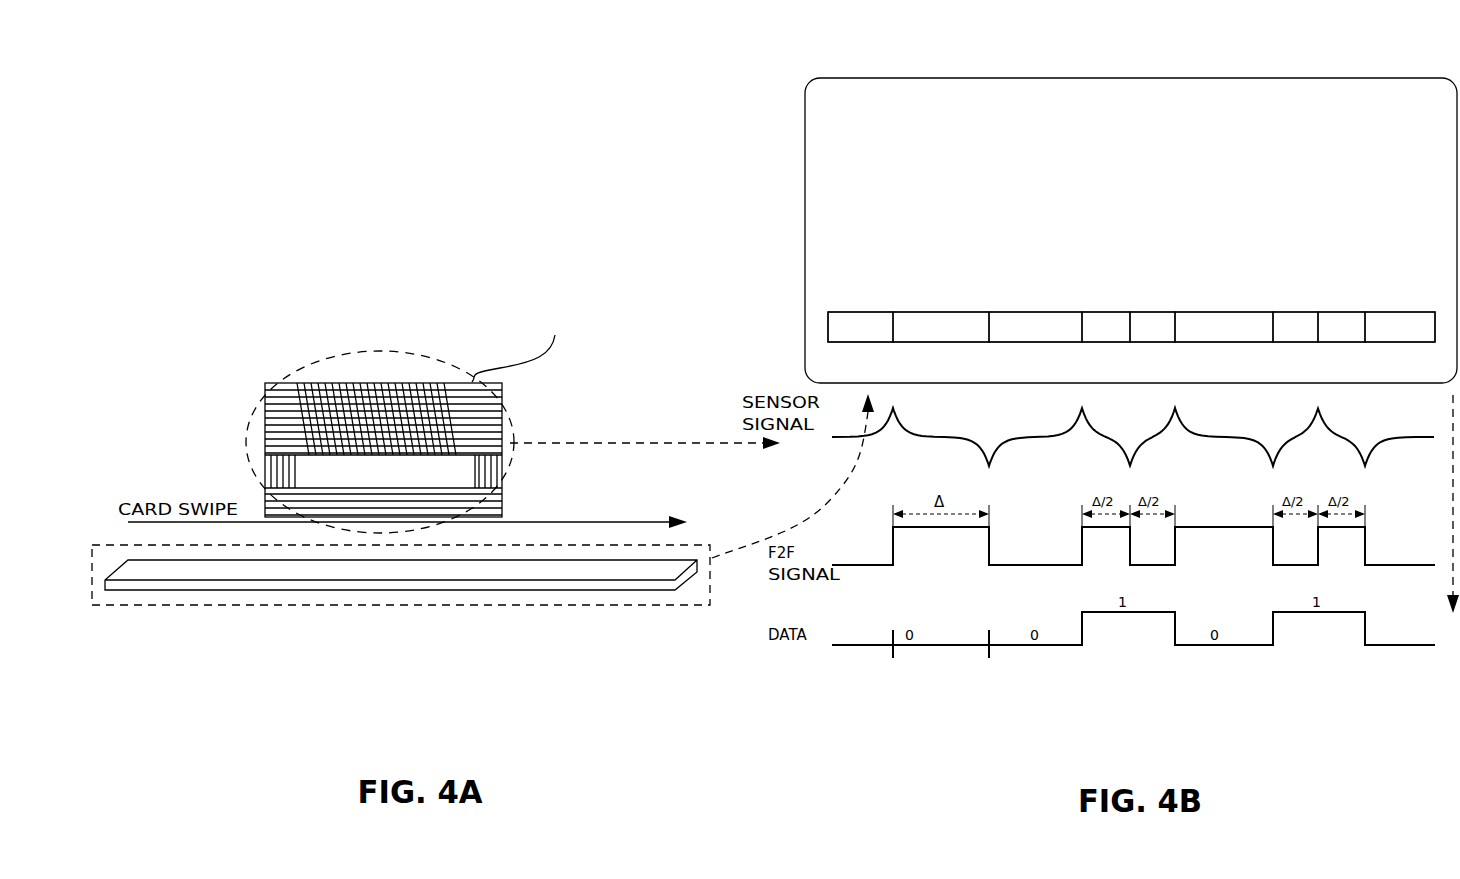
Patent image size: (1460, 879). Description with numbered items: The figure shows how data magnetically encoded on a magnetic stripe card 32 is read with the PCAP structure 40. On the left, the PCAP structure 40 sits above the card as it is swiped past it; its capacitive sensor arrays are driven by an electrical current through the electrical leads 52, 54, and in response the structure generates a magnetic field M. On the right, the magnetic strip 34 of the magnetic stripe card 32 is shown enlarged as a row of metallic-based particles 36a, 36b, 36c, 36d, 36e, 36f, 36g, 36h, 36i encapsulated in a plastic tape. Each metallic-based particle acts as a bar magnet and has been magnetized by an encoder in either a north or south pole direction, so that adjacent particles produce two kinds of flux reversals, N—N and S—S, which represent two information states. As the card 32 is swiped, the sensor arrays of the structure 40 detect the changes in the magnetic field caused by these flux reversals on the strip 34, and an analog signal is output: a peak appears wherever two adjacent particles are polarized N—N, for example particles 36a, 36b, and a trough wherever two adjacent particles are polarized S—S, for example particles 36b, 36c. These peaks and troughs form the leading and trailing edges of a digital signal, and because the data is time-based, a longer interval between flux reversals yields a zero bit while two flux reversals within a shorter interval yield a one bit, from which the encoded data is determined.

In FIG. 4A, the PCAP structure 40 is at (325, 349).
In FIG. 4A, the electrical lead 52 is at (290, 383).
In FIG. 4A, the electrical lead 54 is at (446, 383).
In FIG. 4A, the magnetic strip 34 is at (312, 607).
In FIG. 4B, the magnetic strip 34 is at (828, 330).
In FIG. 4B, the magnetic stripe card 32 is at (1383, 78).
In FIG. 4B, the metallic-based particle 36a is at (860, 312).
In FIG. 4B, the metallic-based particle 36b is at (942, 312).
In FIG. 4B, the metallic-based particle 36c is at (1028, 312).
In FIG. 4B, the metallic-based particle 36d is at (1105, 312).
In FIG. 4B, the metallic-based particle 36e is at (1145, 312).
In FIG. 4B, the metallic-based particle 36f is at (1210, 312).
In FIG. 4B, the metallic-based particle 36g is at (1283, 312).
In FIG. 4B, the metallic-based particle 36h is at (1347, 312).
In FIG. 4B, the metallic-based particle 36i is at (1410, 312).